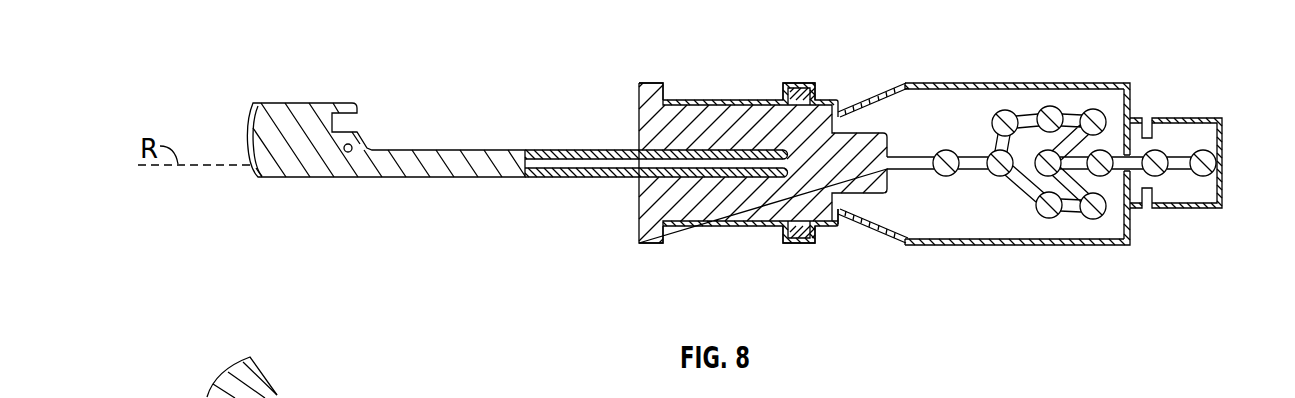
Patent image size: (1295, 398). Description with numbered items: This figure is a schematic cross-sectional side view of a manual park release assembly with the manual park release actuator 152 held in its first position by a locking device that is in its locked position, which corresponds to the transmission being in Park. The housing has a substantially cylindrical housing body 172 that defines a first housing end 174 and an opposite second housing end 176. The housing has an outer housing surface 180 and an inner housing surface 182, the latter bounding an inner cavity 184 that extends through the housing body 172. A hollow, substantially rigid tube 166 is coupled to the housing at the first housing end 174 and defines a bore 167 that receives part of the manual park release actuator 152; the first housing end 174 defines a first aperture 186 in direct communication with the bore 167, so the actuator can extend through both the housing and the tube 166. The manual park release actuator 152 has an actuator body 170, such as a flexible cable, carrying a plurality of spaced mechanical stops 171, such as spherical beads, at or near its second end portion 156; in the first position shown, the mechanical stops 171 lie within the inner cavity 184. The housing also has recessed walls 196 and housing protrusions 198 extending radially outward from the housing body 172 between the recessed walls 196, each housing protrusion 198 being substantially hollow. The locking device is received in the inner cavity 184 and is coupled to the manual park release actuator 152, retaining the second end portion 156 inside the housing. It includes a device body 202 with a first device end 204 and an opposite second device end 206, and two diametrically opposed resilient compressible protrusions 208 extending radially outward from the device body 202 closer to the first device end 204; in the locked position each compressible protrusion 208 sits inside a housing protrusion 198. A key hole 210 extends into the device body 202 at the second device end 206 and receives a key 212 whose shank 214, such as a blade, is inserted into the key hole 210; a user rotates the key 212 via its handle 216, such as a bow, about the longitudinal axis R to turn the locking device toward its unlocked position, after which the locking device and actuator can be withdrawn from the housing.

The manual park release actuator 152 is at (1152, 153).
The second end portion 156 is at (893, 157).
The tube 166 is at (1213, 117).
The bore 167 is at (1190, 195).
The actuator body 170 is at (1073, 116).
The mechanical stop 171 is at (1047, 227).
The housing body 172 is at (997, 247).
The first housing end 174 is at (1136, 83).
The second housing end 176 is at (639, 88).
The outer housing surface 180 is at (998, 84).
The inner housing surface 182 is at (1032, 95).
The inner cavity 184 is at (1082, 234).
The first aperture 186 is at (1118, 137).
The recessed walls 196 is at (728, 98).
The housing protrusion 198 is at (802, 83).
The device body 202 is at (695, 207).
The first device end 204 is at (837, 208).
The second device end 206 is at (639, 205).
The compressible protrusion 208 is at (802, 93).
The key hole 210 is at (690, 155).
The key 212 is at (455, 127).
The shank 214 is at (443, 160).
The handle 216 is at (320, 103).